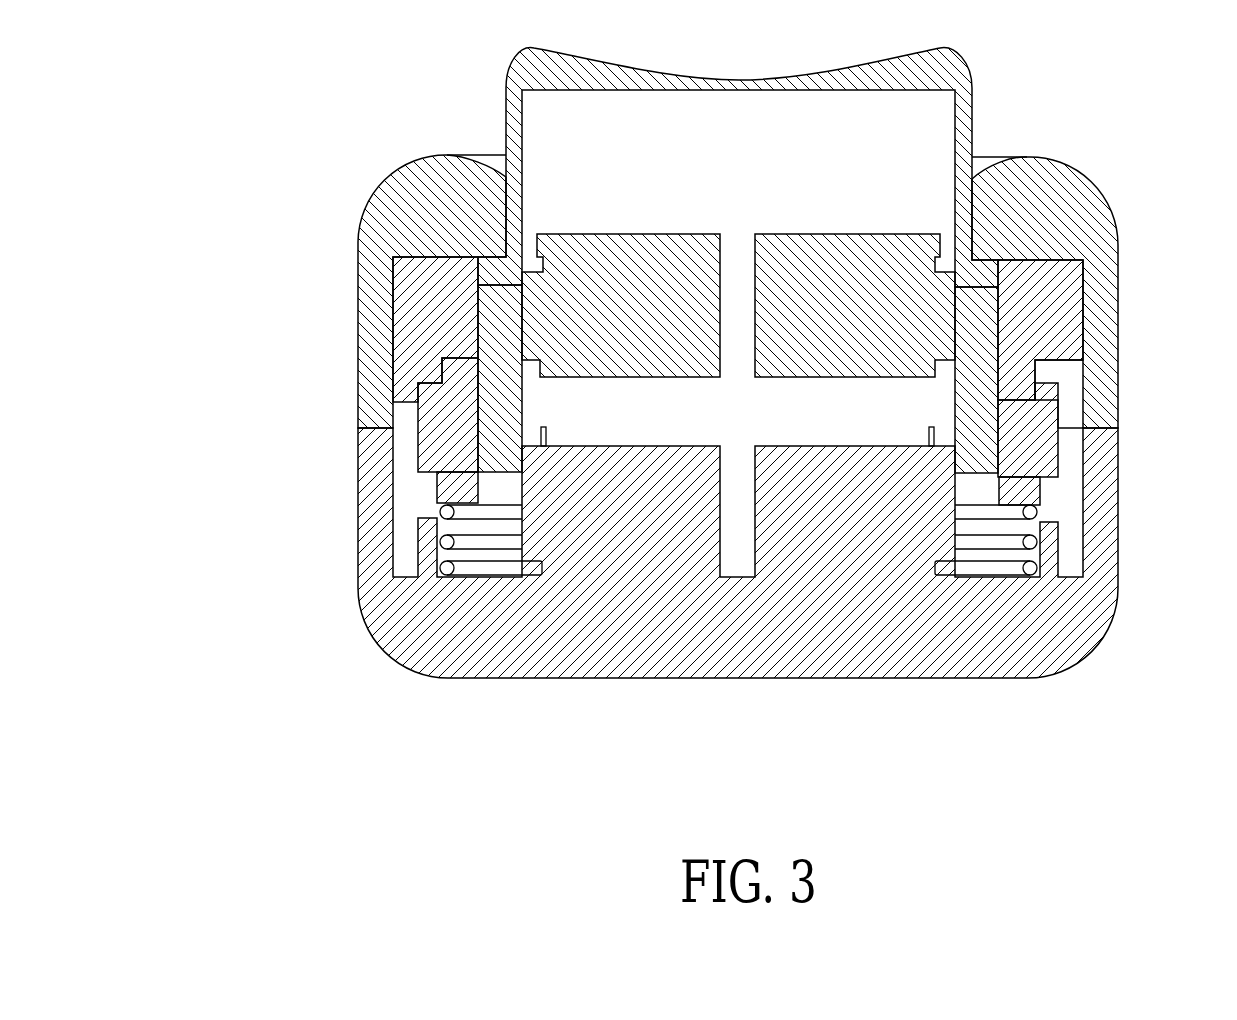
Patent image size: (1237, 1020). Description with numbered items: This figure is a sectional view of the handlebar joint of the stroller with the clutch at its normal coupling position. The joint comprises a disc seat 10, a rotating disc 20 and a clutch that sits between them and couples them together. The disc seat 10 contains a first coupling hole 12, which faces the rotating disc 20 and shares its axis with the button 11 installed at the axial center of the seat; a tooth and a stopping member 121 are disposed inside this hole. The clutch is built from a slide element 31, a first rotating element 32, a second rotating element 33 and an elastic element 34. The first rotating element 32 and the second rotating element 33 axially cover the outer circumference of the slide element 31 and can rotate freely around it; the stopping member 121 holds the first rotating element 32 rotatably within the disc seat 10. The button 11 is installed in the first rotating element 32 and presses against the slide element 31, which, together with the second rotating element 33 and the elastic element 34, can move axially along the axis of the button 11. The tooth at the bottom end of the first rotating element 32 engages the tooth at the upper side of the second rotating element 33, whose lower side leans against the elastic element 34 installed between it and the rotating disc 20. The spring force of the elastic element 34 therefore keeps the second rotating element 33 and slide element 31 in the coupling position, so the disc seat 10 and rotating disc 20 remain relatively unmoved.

The disc seat 10 is at (437, 173).
The button 11 is at (930, 65).
The first coupling hole 12 is at (1082, 303).
The stopping member 121 is at (1082, 430).
The rotating disc 20 is at (1013, 660).
The slide element 31 is at (1002, 376).
The first rotating element 32 is at (402, 307).
The second rotating element 33 is at (440, 447).
The elastic element 34 is at (1033, 505).